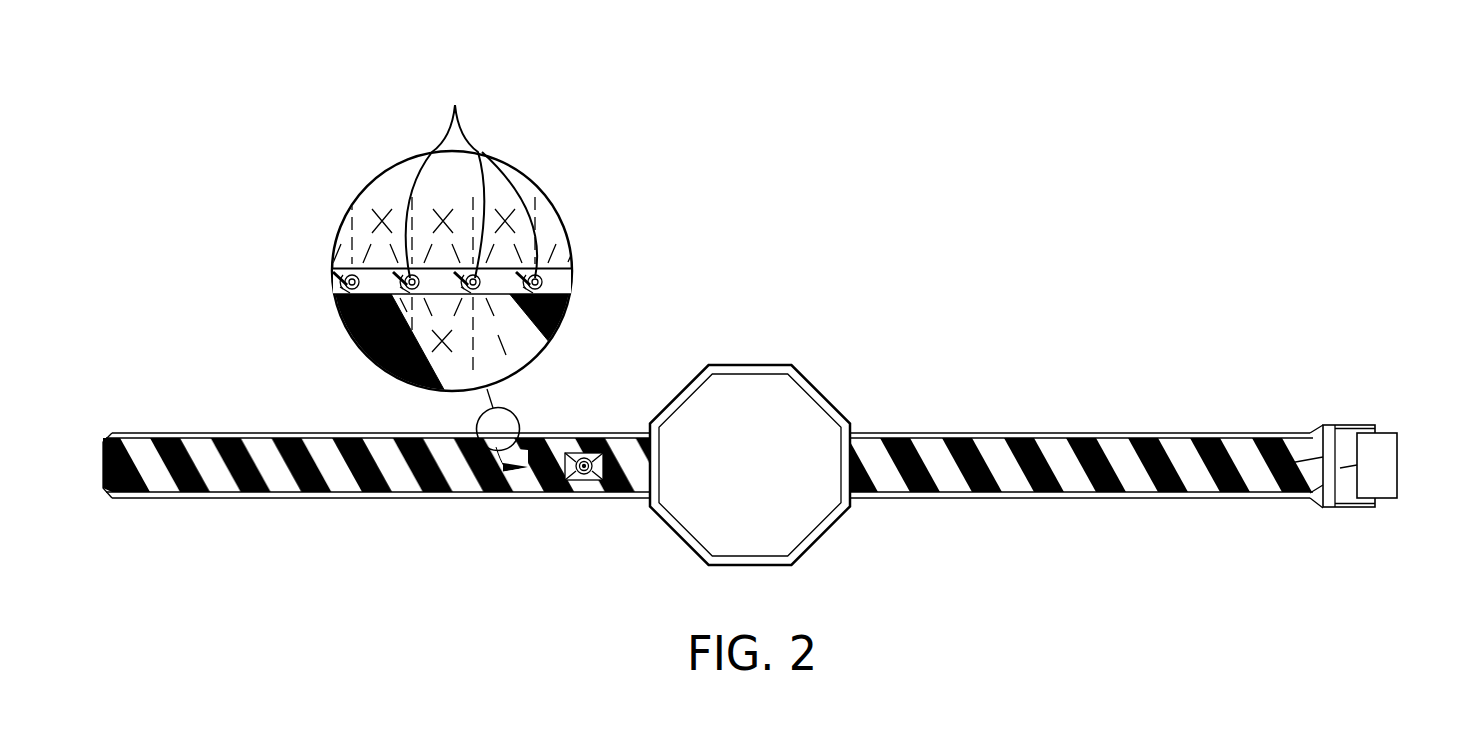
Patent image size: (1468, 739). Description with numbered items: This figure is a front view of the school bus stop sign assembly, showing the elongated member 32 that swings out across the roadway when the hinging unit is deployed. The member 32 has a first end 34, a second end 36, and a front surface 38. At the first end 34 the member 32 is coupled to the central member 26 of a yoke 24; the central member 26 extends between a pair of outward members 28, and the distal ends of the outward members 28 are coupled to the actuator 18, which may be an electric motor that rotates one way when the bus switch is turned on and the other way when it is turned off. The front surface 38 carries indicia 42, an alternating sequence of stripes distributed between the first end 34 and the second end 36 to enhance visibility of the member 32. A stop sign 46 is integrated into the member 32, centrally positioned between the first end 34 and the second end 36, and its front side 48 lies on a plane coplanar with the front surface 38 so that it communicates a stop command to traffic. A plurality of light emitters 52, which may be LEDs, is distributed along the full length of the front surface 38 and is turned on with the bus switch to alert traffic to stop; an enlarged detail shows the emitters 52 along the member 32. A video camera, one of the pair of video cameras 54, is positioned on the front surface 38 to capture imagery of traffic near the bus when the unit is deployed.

The actuator 18 is at (1397, 498).
The yoke 24 is at (1322, 508).
The central member 26 is at (1270, 438).
The outward members 28 is at (1354, 425).
The member 32 is at (1052, 433).
The first end 34 is at (1323, 485).
The second end 36 is at (101, 468).
The front surface 38 is at (1020, 476).
The indicia 42 is at (481, 485).
The stop sign 46 is at (709, 366).
The front side 48 is at (771, 395).
The light emitters 52 is at (455, 108).
The video cameras 54 is at (620, 493).